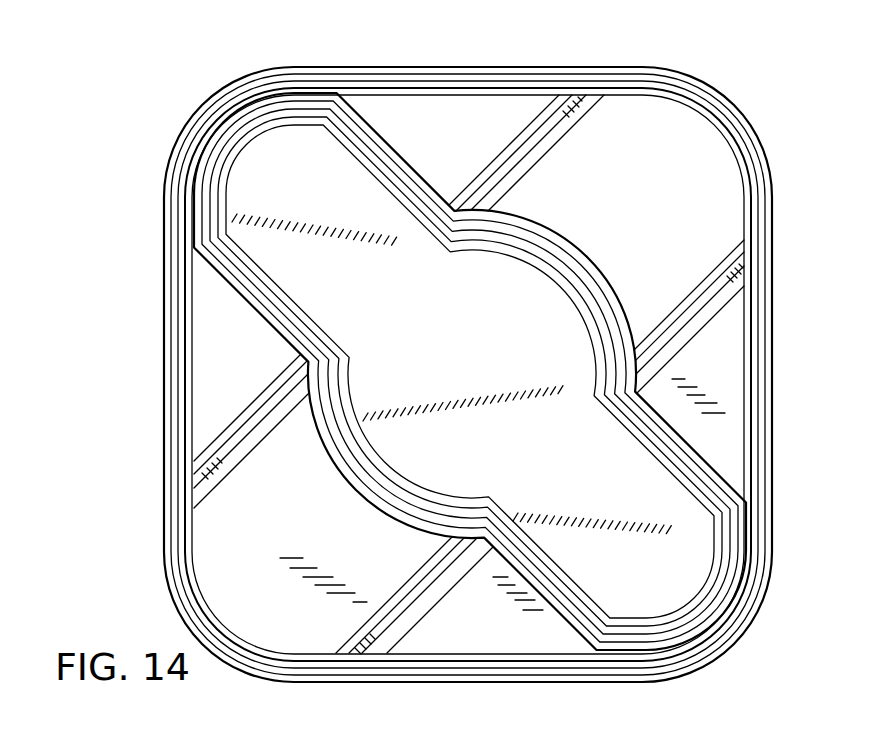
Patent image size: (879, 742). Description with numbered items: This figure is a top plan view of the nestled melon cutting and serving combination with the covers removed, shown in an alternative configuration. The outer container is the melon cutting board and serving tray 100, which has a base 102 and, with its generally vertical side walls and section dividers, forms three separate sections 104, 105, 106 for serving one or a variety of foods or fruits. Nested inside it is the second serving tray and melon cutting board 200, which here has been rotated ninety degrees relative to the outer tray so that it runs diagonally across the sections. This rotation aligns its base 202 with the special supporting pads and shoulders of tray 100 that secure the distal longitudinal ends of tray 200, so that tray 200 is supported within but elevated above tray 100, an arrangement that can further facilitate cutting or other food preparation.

The melon cutting board and serving tray 100 is at (160, 403).
The base 102 is at (285, 542).
The section 104 is at (494, 598).
The section 105 is at (664, 158).
The section 106 is at (470, 153).
The second serving tray and melon cutting board 200 is at (553, 228).
The base 202 is at (512, 442).